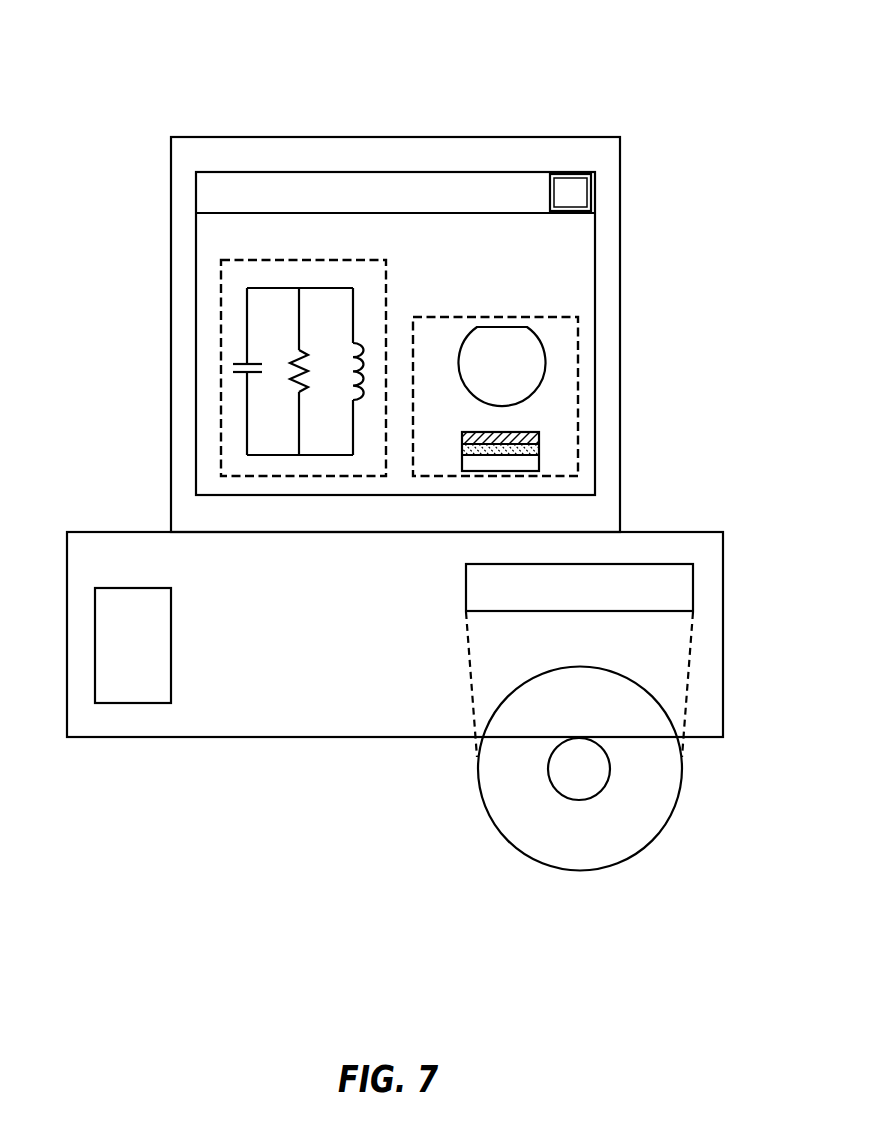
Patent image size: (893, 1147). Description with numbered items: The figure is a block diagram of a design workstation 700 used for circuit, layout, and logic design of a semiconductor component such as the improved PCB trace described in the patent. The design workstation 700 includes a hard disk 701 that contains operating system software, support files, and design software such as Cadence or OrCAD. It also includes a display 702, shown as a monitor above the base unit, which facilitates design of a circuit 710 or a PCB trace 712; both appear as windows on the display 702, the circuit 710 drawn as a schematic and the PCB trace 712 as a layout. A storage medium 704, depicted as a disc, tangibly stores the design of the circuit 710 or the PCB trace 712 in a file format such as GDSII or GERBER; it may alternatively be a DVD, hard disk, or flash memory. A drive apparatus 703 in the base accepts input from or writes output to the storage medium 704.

The design workstation 700 is at (410, 460).
The hard disk 701 is at (172, 613).
The display 702 is at (575, 136).
The drive apparatus 703 is at (682, 563).
The storage medium 704 is at (577, 871).
The circuit 710 is at (386, 273).
The PCB trace 712 is at (486, 316).